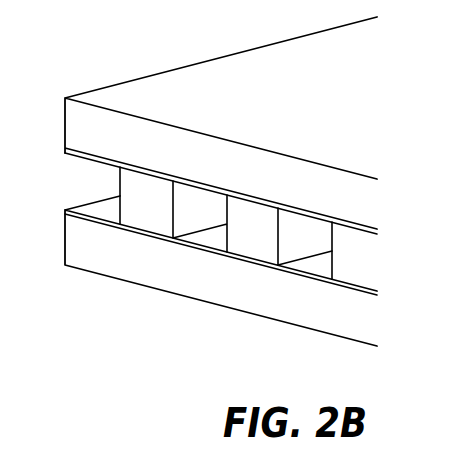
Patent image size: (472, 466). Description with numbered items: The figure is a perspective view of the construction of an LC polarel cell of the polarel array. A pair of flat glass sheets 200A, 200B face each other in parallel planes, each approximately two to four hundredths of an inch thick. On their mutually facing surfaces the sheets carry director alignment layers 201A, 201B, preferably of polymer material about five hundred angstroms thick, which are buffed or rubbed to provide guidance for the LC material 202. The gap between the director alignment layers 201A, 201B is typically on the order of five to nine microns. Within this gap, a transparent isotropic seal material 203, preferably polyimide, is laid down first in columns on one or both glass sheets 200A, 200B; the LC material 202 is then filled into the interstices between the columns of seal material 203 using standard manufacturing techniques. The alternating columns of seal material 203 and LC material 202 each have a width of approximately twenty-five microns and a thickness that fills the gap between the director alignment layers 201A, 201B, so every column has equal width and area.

The flat glass sheet 200A is at (190, 84).
The director alignment layer 201A is at (268, 199).
The flat glass sheet 200B is at (115, 258).
The director alignment layer 201B is at (200, 252).
The seal material 203 is at (265, 253).
The LC material 202 is at (318, 266).